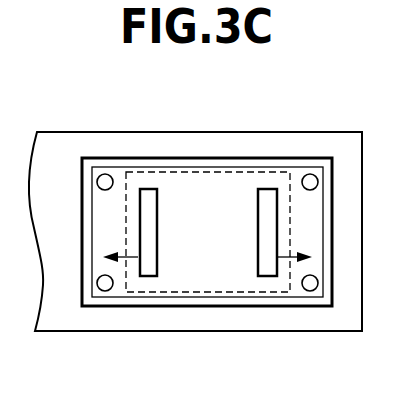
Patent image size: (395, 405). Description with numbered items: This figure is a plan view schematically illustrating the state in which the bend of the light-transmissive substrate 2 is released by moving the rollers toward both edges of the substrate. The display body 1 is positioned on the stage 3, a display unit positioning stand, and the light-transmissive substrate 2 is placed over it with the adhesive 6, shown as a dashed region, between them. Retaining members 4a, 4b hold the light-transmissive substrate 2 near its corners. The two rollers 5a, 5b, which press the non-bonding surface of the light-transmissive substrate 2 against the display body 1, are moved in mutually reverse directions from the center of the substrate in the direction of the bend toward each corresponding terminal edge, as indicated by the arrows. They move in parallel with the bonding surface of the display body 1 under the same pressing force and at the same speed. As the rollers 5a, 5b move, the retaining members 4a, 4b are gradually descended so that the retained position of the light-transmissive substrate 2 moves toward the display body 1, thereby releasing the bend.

The display body 1 is at (207, 275).
The light-transmissive substrate 2 is at (210, 297).
The stage 3 is at (316, 323).
The retaining member 4a is at (105, 173).
The retaining member 4b is at (309, 173).
The roller 5a is at (143, 190).
The roller 5b is at (263, 188).
The adhesive 6 is at (203, 170).